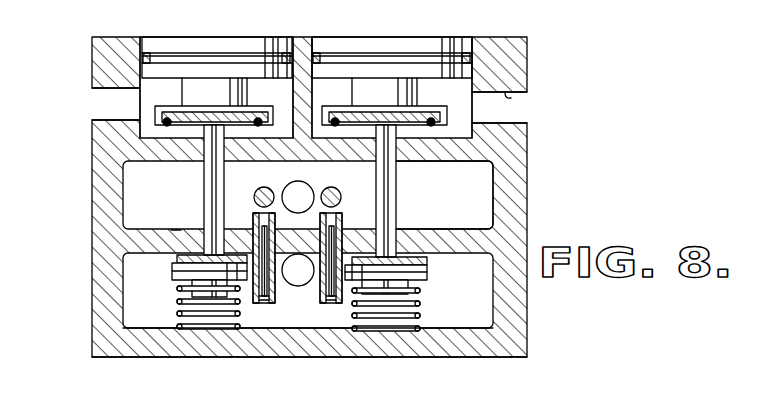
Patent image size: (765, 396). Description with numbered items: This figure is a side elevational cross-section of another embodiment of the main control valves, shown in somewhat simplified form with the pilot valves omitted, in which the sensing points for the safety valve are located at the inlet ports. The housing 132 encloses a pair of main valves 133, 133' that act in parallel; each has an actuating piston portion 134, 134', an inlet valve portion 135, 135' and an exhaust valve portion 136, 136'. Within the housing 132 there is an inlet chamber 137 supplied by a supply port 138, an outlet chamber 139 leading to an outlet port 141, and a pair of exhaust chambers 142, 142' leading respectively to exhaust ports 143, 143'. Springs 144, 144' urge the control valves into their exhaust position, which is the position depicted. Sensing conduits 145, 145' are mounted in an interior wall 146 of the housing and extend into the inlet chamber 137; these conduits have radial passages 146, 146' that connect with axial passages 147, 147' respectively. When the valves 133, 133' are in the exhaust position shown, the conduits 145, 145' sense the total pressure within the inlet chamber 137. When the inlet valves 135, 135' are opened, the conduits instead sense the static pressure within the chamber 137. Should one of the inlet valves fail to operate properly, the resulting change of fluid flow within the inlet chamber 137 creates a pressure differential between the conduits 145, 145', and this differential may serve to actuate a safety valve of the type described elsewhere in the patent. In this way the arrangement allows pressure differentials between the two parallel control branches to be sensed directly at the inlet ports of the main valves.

The housing 132 is at (514, 186).
The main valve 133 is at (185, 190).
The main valve 133' is at (415, 191).
The actuating piston portion 134 is at (217, 44).
The actuating piston portion 134' is at (393, 44).
The inlet valve portion 135 is at (187, 276).
The inlet valve portion 135' is at (411, 275).
The exhaust valve portion 136 is at (221, 103).
The exhaust valve portion 136' is at (392, 103).
The inlet chamber 137 is at (285, 325).
The supply port 138 is at (298, 282).
The outlet chamber 139 is at (485, 212).
The outlet port 141 is at (305, 183).
The exhaust chamber 142 is at (216, 74).
The exhaust chamber 142' is at (392, 74).
The exhaust port 143 is at (84, 104).
The exhaust port 143' is at (531, 105).
The spring 144 is at (184, 307).
The spring 144' is at (415, 309).
The sensing conduit 145 is at (216, 241).
The sensing conduit 145' is at (386, 243).
The radial passage 146 is at (208, 264).
The radial passage 146' is at (329, 314).
The axial passage 147 is at (254, 235).
The axial passage 147' is at (354, 237).